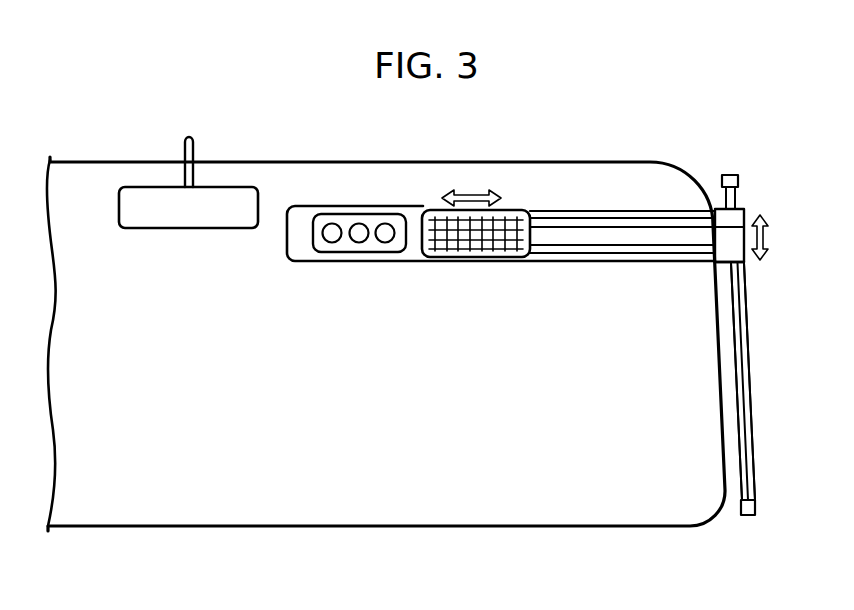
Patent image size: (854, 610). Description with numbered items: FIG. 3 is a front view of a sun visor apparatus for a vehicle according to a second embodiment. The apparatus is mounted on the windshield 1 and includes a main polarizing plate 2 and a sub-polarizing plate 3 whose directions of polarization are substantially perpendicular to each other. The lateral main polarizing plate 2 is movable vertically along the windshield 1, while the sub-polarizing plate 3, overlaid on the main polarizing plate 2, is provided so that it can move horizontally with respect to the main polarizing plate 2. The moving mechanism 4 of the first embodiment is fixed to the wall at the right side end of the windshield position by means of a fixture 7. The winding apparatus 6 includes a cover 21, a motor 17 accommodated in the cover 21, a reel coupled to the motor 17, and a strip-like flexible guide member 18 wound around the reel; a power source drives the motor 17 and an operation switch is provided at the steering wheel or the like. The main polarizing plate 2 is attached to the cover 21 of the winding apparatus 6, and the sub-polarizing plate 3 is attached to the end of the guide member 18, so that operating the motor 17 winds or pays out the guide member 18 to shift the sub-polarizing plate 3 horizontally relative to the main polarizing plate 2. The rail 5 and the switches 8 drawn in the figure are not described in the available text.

The windshield 1 is at (345, 502).
The main polarizing plate 2 is at (632, 263).
The sub-polarizing plate 3 is at (480, 258).
The moving mechanism 4 is at (749, 302).
The rail 5 is at (749, 382).
The winding apparatus 6 is at (749, 266).
The fixture 7 is at (730, 173).
The switches 8 is at (434, 256).
The motor 17 is at (746, 212).
The guide member 18 is at (598, 226).
The cover 21 is at (747, 263).